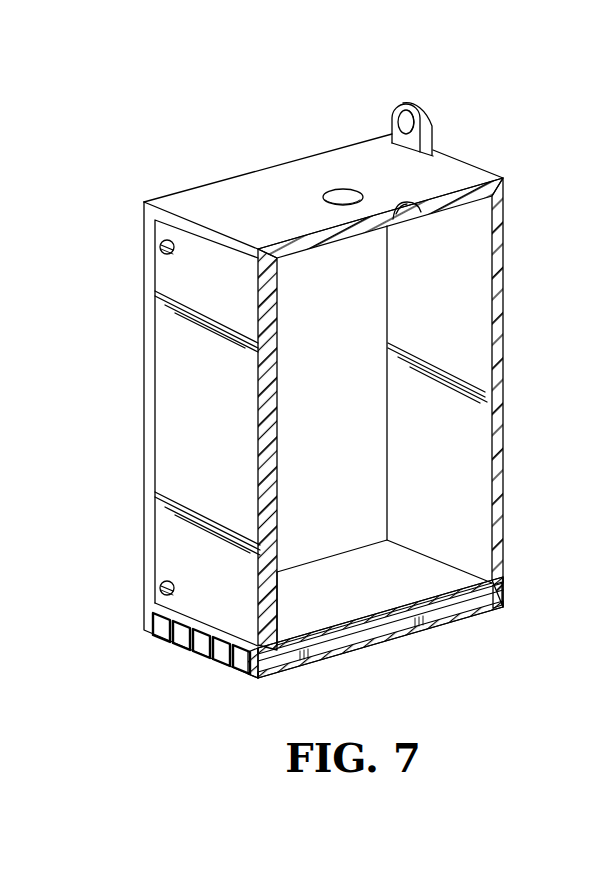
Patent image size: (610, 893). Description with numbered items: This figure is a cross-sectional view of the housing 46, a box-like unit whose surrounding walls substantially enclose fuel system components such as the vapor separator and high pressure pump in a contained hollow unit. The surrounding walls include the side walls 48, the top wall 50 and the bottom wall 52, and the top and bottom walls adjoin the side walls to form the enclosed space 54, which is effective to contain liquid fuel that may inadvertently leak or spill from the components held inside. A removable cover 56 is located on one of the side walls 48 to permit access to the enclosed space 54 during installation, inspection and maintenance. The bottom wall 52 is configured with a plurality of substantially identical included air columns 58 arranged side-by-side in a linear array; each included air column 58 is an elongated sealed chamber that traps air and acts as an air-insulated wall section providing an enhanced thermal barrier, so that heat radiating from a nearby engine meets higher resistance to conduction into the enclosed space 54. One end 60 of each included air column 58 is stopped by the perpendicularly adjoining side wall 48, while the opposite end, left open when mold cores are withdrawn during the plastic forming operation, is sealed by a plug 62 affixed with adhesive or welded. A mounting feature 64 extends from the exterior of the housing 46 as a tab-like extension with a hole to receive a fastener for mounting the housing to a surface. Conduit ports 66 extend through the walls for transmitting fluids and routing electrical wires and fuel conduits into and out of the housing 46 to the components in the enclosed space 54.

The housing 46 is at (238, 172).
The side walls 48 is at (506, 312).
The top wall 50 is at (343, 158).
The bottom wall 52 is at (414, 636).
The enclosed space 54 is at (476, 438).
The removable cover 56 is at (172, 354).
The included air column 58 is at (377, 628).
The end of air column 60 is at (500, 604).
The plug 62 is at (182, 635).
The mounting feature 64 is at (412, 100).
The conduit port 66 is at (343, 190).